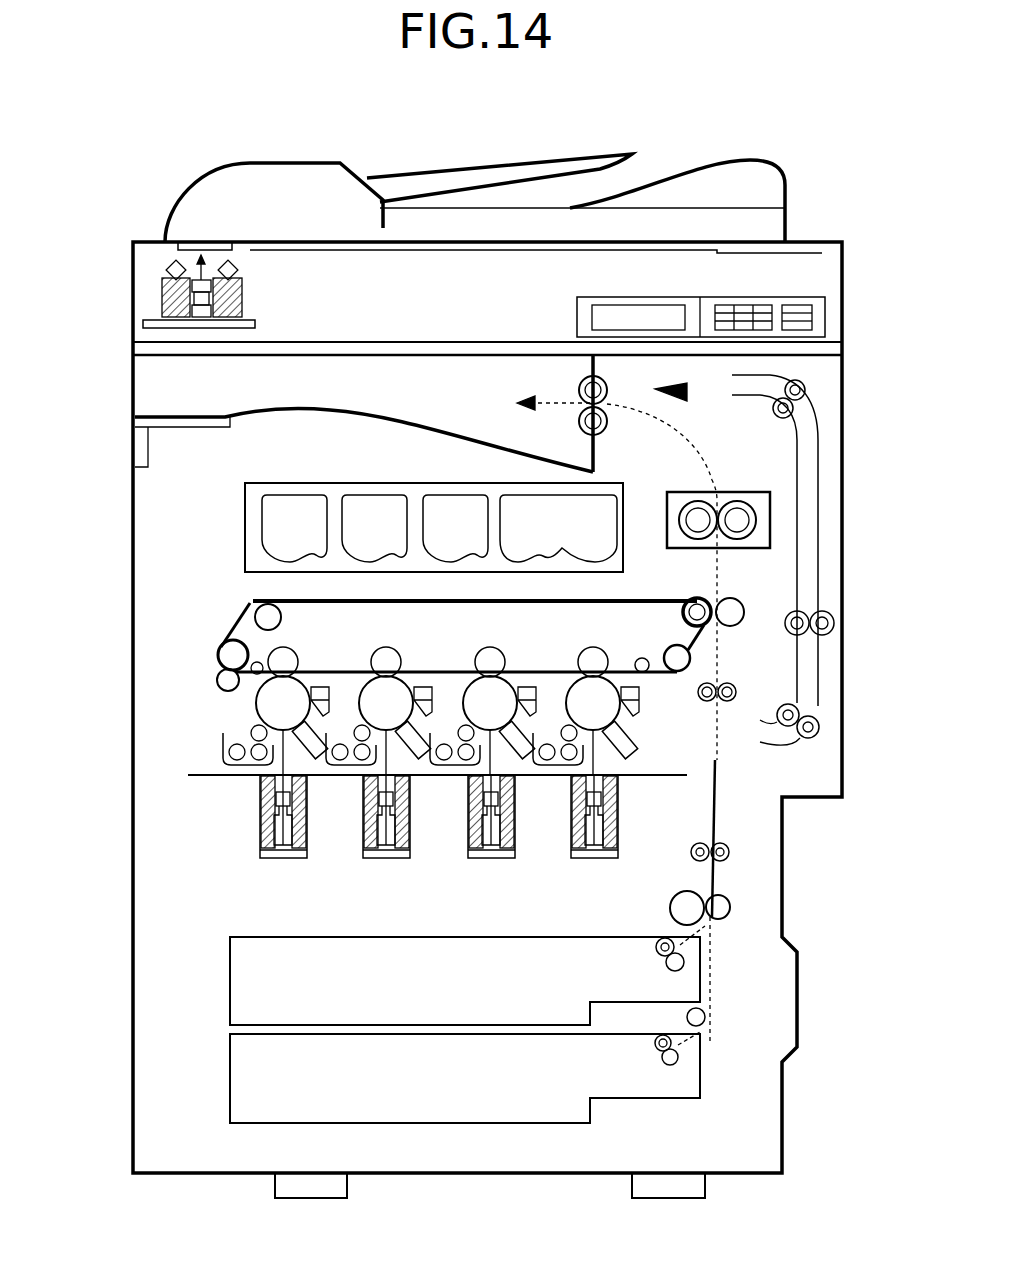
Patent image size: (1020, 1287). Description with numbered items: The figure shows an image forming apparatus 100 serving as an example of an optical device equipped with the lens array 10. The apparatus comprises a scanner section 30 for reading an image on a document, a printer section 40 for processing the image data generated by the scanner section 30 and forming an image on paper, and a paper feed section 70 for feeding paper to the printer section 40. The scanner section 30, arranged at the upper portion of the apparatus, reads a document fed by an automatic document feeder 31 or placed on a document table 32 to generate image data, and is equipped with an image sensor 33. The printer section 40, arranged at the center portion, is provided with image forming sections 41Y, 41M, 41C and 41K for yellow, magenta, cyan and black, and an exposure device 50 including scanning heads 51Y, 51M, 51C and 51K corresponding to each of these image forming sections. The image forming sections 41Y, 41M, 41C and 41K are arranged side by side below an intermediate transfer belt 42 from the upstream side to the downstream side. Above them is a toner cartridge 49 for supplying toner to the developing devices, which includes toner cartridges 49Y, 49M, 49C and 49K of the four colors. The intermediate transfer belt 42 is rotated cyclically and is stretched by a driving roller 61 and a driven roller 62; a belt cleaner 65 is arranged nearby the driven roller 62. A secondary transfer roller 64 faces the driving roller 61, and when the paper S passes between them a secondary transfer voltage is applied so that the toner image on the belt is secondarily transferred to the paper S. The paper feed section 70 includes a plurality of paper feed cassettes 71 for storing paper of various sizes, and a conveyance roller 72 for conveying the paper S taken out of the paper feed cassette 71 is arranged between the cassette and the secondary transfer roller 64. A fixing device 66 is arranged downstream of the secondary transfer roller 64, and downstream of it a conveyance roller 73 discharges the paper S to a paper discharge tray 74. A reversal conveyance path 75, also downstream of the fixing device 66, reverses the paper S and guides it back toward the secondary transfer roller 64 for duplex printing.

The image forming apparatus 100 is at (706, 143).
The lens array 10 is at (243, 292).
The scanner section 30 is at (410, 268).
The automatic document feeder 31 is at (225, 200).
The document table 32 is at (492, 240).
The image sensor 33 is at (162, 300).
The printer section 40 is at (158, 735).
The image forming section 41Y is at (255, 713).
The image forming section 41M is at (352, 710).
The image forming section 41C is at (458, 710).
The image forming section 41K is at (563, 710).
The intermediate transfer belt 42 is at (488, 605).
The toner cartridge 49 is at (245, 540).
The toner cartridge 49Y is at (294, 528).
The toner cartridge 49M is at (374, 528).
The toner cartridge 49C is at (455, 528).
The toner cartridge 49K is at (558, 528).
The exposure device 50 is at (226, 812).
The scanning head 51Y is at (262, 838).
The scanning head 51M is at (363, 838).
The scanning head 51C is at (468, 838).
The scanning head 51K is at (571, 838).
The driving roller 61 is at (692, 598).
The driven roller 62 is at (218, 648).
The secondary transfer roller 64 is at (733, 598).
The belt cleaner 65 is at (218, 680).
The fixing device 66 is at (740, 490).
The paper feed section 70 is at (175, 1043).
The paper feed cassette 71 is at (495, 948).
The conveyance roller 72 is at (722, 843).
The conveyance roller 73 is at (608, 428).
The paper discharge tray 74 is at (447, 432).
The reversal conveyance path 75 is at (822, 497).
The paper S is at (715, 878).